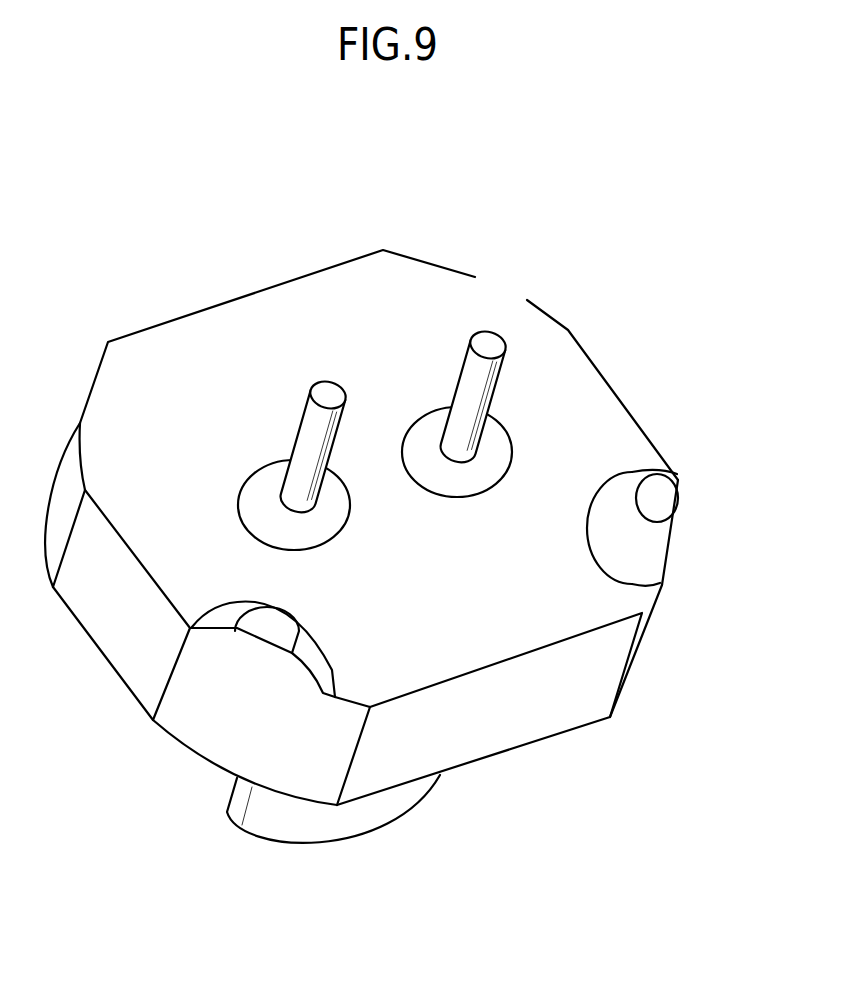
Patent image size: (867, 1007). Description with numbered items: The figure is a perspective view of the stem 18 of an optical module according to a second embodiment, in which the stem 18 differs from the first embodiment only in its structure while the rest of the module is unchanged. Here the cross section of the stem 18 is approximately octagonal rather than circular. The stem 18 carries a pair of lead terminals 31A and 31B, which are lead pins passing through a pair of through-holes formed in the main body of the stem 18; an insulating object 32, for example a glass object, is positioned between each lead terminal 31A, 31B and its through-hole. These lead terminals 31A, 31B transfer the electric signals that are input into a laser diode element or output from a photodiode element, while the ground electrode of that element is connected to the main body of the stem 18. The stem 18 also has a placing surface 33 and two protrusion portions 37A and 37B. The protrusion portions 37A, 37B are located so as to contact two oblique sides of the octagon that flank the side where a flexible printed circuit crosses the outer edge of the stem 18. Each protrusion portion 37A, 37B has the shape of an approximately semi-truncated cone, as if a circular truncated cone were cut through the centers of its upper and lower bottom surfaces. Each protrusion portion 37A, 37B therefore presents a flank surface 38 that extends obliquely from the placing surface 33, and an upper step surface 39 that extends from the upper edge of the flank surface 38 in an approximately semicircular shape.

The stem 18 is at (560, 257).
The lead terminal 31A is at (326, 391).
The lead terminal 31B is at (489, 341).
The insulating object 32 is at (263, 485).
The placing surface 33 is at (470, 653).
The protrusion portion 37A is at (208, 607).
The protrusion portion 37B is at (688, 481).
The flank surface 38 is at (318, 667).
The upper step surface 39 is at (270, 628).